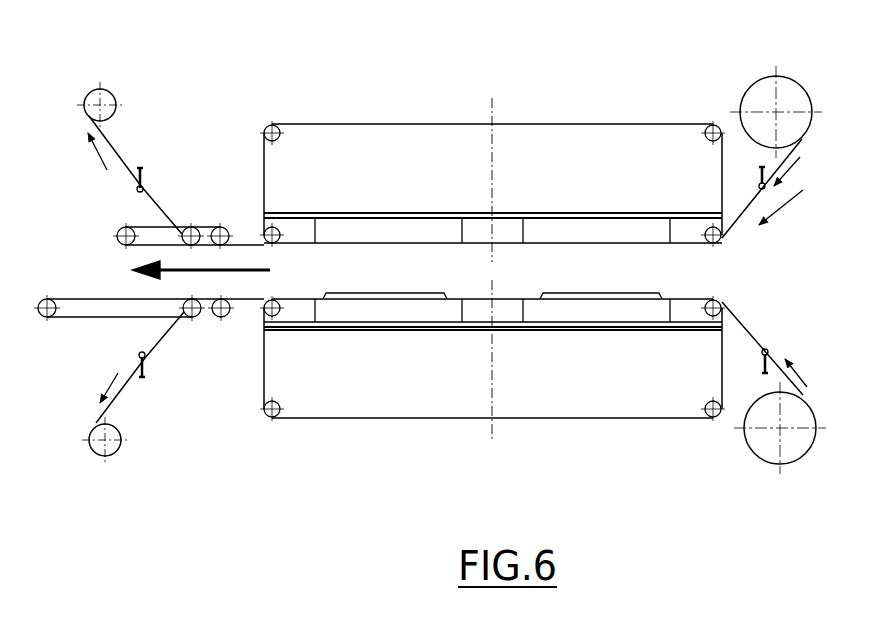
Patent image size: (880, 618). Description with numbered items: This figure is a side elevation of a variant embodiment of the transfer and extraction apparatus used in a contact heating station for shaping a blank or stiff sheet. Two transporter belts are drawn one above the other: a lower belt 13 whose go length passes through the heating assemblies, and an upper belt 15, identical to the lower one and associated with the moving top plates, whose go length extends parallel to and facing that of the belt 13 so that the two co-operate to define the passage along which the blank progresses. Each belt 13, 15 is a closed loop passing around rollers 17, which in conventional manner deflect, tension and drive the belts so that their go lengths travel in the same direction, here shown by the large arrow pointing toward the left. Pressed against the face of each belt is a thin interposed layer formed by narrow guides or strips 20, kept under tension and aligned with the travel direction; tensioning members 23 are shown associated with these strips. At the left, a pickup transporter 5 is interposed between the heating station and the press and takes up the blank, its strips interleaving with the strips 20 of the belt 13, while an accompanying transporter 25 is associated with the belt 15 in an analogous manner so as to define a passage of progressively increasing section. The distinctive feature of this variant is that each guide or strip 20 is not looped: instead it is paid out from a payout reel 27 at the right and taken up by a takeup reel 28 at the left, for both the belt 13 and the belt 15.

The pickup transporter 5 is at (82, 323).
The belt 13 is at (538, 421).
The belt 15 is at (561, 121).
The rollers 17 is at (278, 139).
The guides 20 is at (754, 318).
The tensioning members 23 is at (759, 176).
The accompanying transporter 25 is at (197, 220).
The payout reel 27 is at (790, 92).
The takeup reel 28 is at (110, 102).